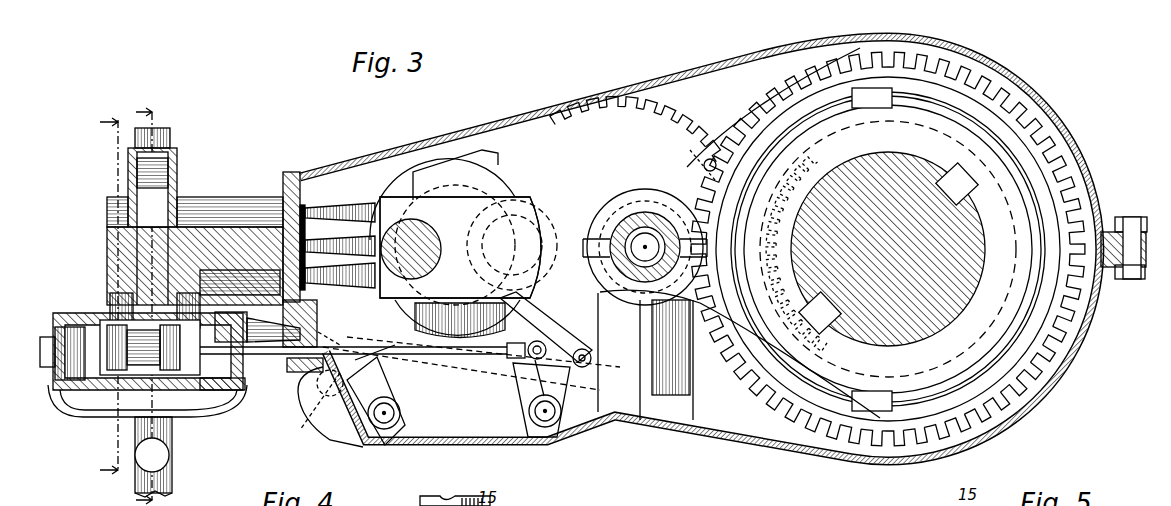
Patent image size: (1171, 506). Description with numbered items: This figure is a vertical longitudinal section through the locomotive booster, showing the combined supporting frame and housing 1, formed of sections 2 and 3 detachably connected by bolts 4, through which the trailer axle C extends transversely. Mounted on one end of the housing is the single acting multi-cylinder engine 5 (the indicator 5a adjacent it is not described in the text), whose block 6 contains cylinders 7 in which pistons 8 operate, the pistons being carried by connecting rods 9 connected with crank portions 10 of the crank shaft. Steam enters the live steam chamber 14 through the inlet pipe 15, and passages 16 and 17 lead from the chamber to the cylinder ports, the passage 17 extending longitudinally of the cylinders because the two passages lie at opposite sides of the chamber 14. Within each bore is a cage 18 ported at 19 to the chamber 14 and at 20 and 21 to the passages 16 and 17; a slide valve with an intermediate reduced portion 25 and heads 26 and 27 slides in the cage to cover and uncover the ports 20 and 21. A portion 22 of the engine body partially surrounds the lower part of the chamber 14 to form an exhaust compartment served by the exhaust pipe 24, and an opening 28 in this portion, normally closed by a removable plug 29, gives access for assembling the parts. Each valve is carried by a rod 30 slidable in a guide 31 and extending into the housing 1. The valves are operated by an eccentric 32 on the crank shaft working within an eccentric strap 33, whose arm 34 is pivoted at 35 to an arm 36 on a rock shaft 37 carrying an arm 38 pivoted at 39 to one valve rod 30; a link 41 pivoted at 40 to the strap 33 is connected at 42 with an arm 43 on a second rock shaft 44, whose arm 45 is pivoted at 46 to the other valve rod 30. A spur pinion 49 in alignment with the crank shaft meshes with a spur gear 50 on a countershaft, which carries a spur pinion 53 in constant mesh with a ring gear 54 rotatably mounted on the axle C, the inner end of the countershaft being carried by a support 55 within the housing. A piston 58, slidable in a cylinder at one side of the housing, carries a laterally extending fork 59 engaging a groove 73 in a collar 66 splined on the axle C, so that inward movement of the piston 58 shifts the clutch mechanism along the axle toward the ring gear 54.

The frame or housing 1 is at (1098, 210).
The section 2 is at (1030, 405).
The section 3 is at (1032, 90).
The bolts 4 is at (1130, 280).
The motor or engine 5 is at (213, 210).
The section line 5a is at (149, 296).
The block 6 is at (107, 251).
The cylinders 7 is at (186, 205).
The pistons 8 is at (315, 210).
The connecting rods 9 is at (345, 225).
The crank portions 10 is at (470, 175).
The live steam chamber 14 is at (177, 165).
The inlet pipe 15 is at (170, 140).
The passage 16 is at (110, 300).
The passage 17 is at (210, 318).
The cage 18 is at (90, 385).
The slot or port 19 is at (148, 378).
The slot or port 20 is at (105, 388).
The slot or port 21 is at (188, 393).
The portion of engine body 22 is at (200, 393).
The exhaust pipe 24 is at (170, 462).
The intermediate reduced portion 25 is at (143, 347).
The head 26 is at (116, 347).
The head 27 is at (171, 347).
The opening 28 is at (62, 325).
The removable plug 29 is at (62, 360).
The rod 30 is at (285, 355).
The guide 31 is at (255, 335).
The cam or eccentric 32 is at (443, 278).
The eccentric strap or carriage 33 is at (395, 296).
The arm 34 is at (461, 342).
The pivot connection 35 is at (308, 412).
The arm 36 is at (385, 390).
The rock shaft 37 is at (402, 416).
The arm 38 is at (378, 372).
The pivot connection 39 is at (331, 337).
The pivot connection 40 is at (546, 327).
The link 41 is at (560, 335).
The pivot connection 42 is at (592, 356).
The arm 43 is at (590, 420).
The rock shaft 44 is at (545, 428).
The arm 45 is at (528, 412).
The pivot connection 46 is at (528, 367).
The spur pinion 49 is at (440, 198).
The spur gear 50 is at (698, 95).
The spur pinion 53 is at (620, 185).
The ring gear 54 is at (768, 98).
The support 55 is at (595, 283).
The piston 58 is at (648, 222).
The fork 59 is at (712, 170).
The collar 66 is at (962, 100).
The groove 73 is at (905, 128).
The axle C is at (910, 175).